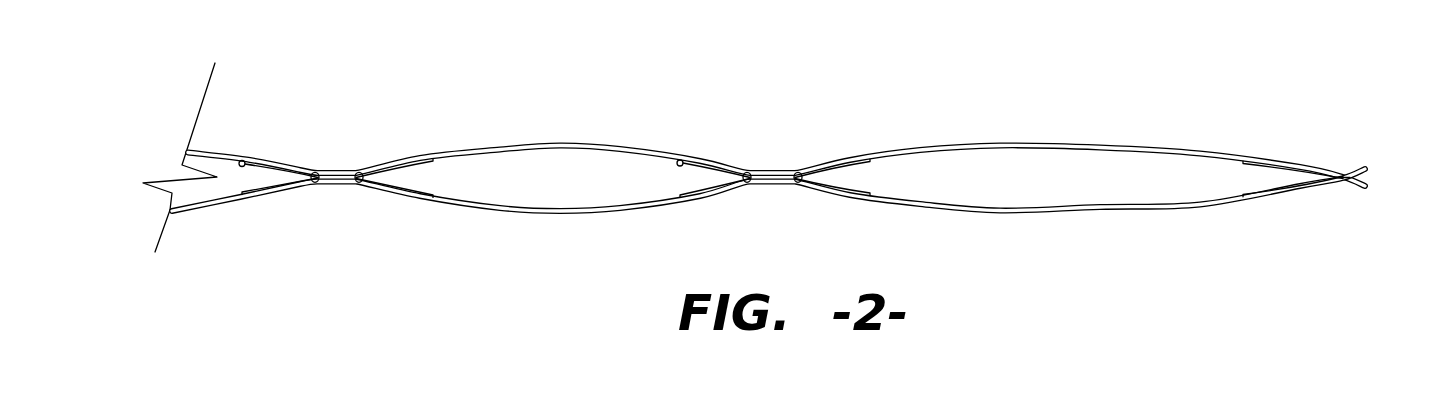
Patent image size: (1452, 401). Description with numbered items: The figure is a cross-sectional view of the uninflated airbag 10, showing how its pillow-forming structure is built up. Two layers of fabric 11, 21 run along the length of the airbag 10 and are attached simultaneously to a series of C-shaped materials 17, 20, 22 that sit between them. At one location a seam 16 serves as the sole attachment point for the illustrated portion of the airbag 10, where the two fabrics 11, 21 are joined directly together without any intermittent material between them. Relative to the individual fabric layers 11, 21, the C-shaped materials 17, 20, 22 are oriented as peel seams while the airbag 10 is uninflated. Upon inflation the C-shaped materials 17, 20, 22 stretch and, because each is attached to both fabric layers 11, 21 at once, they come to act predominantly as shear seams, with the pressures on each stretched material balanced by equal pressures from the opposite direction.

The airbag 10 is at (807, 177).
The layer of fabric 11 is at (528, 132).
The seam 16 is at (1323, 152).
The C-shaped material 17 is at (1253, 163).
The C-shaped material 20 is at (244, 160).
The layer of fabric 21 is at (525, 214).
The C-shaped material 22 is at (413, 166).